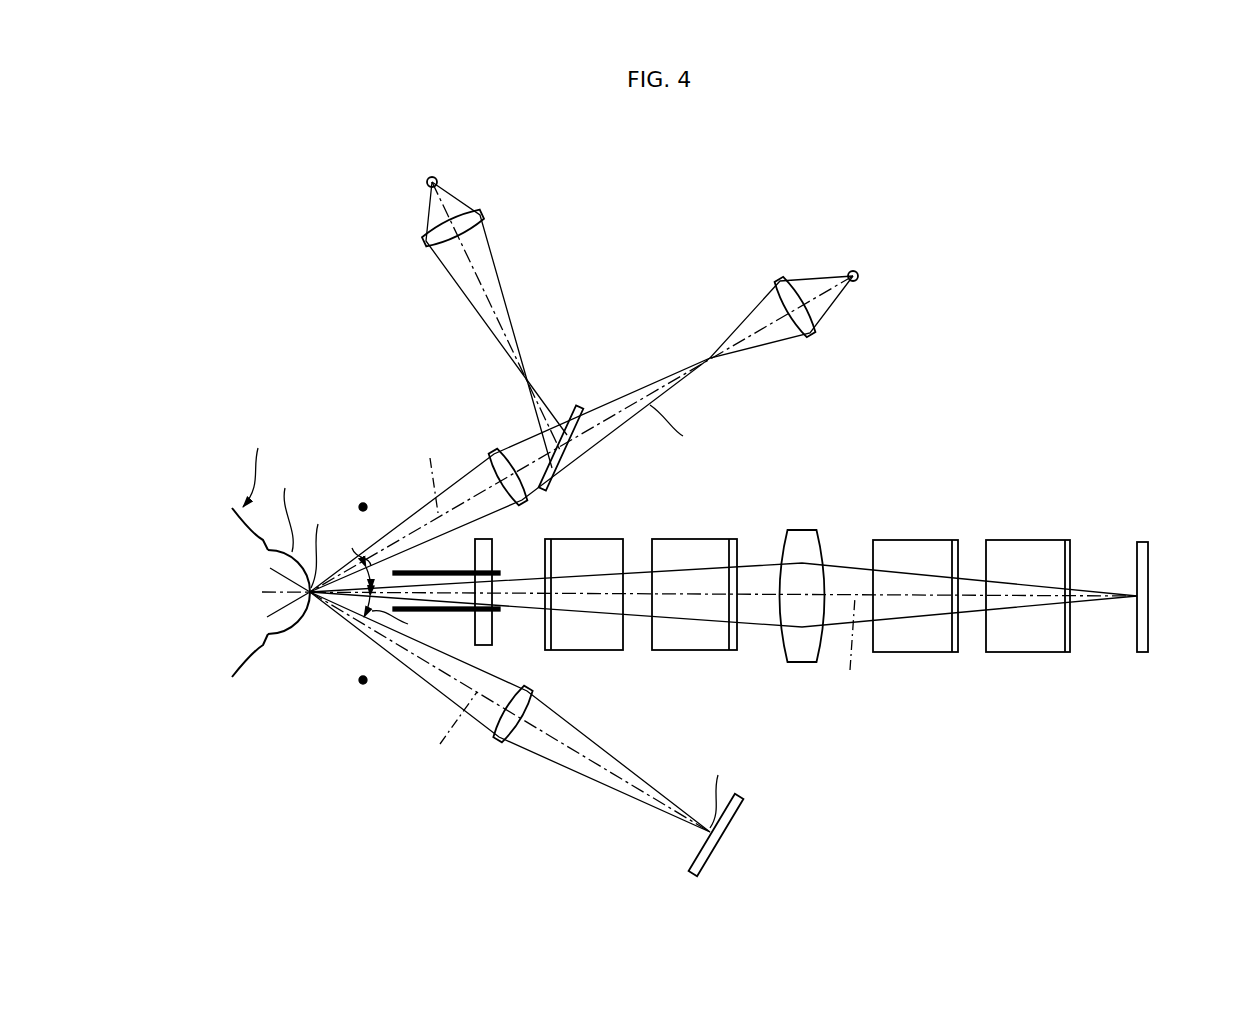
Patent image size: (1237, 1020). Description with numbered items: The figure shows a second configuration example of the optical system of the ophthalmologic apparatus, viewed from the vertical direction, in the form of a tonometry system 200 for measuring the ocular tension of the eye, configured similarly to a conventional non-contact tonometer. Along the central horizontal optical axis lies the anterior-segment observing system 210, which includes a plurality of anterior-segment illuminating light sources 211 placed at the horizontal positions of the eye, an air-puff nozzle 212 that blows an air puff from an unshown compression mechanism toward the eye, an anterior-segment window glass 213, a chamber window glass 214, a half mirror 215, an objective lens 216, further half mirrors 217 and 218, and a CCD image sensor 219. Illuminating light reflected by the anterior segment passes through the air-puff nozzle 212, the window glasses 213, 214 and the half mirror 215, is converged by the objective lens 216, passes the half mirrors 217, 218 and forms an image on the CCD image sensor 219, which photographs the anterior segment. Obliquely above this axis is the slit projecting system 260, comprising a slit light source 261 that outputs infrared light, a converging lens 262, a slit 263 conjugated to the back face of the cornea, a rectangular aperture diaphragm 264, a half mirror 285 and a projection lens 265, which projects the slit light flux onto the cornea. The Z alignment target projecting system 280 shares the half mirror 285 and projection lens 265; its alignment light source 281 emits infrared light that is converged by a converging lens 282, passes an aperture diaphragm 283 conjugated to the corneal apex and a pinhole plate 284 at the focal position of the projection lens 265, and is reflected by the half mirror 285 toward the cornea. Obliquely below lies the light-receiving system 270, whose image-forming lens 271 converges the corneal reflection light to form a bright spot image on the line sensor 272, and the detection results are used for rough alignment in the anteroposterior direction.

The tonometry system 200 is at (1115, 295).
The anterior-segment observing system 210 is at (757, 503).
The anterior-segment illuminating light sources 211 is at (363, 503).
The air-puff nozzle 212 is at (418, 573).
The anterior-segment window glass 213 is at (493, 550).
The chamber window glass 214 is at (610, 651).
The half mirror 215 is at (695, 539).
The objective lens 216 is at (803, 545).
The half mirror 217 is at (918, 540).
The half mirror 218 is at (1027, 540).
The CCD image sensor 219 is at (1143, 542).
The slit projecting system 260 is at (645, 300).
The slit light source 261 is at (857, 281).
The converging lens 262 is at (777, 280).
The slit 263 is at (737, 407).
The rectangular aperture diaphragm 264 is at (627, 449).
The projection lens 265 is at (497, 447).
The light-receiving system 270 is at (578, 810).
The image-forming lens 271 is at (497, 739).
The line sensor 272 is at (695, 858).
The Z alignment target projecting system 280 is at (529, 239).
The alignment light source 281 is at (426, 182).
The converging lens 282 is at (478, 213).
The aperture diaphragm 283 is at (455, 331).
The pinhole plate 284 is at (496, 395).
The half mirror 285 is at (565, 479).